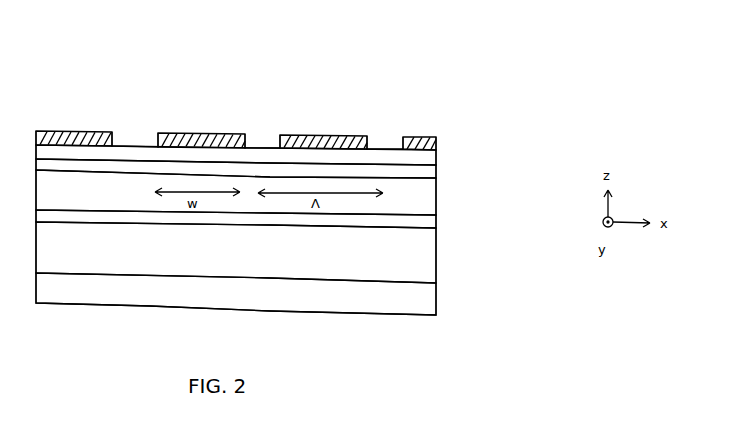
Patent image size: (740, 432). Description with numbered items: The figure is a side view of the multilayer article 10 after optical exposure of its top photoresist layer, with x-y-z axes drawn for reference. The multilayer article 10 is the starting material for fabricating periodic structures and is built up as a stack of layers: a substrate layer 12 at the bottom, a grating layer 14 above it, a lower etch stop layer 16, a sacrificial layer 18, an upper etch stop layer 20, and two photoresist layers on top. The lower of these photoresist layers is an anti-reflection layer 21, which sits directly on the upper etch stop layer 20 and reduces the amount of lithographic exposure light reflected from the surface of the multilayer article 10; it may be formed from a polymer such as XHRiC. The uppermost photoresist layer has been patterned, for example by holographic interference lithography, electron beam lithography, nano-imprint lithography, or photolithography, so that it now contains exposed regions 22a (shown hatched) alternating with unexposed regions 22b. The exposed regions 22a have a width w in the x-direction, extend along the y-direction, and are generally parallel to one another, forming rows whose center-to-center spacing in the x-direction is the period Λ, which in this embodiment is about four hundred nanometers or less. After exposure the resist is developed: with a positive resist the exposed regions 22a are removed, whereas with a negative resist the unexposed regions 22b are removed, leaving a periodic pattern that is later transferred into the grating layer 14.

The multilayer article 10 is at (514, 100).
The substrate layer 12 is at (427, 297).
The grating layer 14 is at (427, 261).
The lower etch stop layer 16 is at (429, 221).
The sacrificial layer 18 is at (427, 193).
The upper etch stop layer 20 is at (430, 172).
The anti-reflection layer 21 is at (433, 158).
The exposed regions 22a is at (76, 131).
The unexposed regions 22b is at (133, 139).